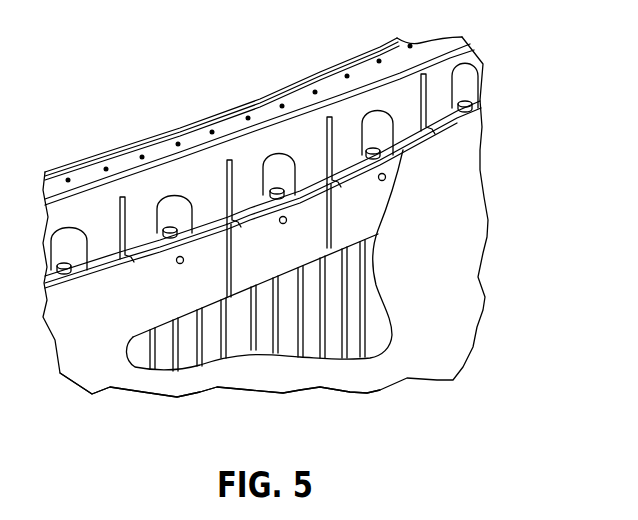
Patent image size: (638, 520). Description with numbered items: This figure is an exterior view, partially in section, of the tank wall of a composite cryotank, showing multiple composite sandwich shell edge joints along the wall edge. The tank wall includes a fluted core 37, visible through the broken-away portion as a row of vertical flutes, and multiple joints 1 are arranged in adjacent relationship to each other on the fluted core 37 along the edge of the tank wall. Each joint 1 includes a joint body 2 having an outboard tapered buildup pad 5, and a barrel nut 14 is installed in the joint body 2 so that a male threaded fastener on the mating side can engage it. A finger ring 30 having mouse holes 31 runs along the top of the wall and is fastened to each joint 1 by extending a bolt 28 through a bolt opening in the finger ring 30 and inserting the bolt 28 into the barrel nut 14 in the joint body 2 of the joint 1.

The joint 1 is at (297, 220).
The joint body 2 is at (218, 303).
The outboard tapered buildup pad 5 is at (195, 297).
The barrel nut 14 is at (279, 220).
The bolt 28 is at (278, 188).
The finger ring 30 is at (455, 62).
The mouse holes 31 is at (470, 82).
The fluted core 37 is at (332, 346).